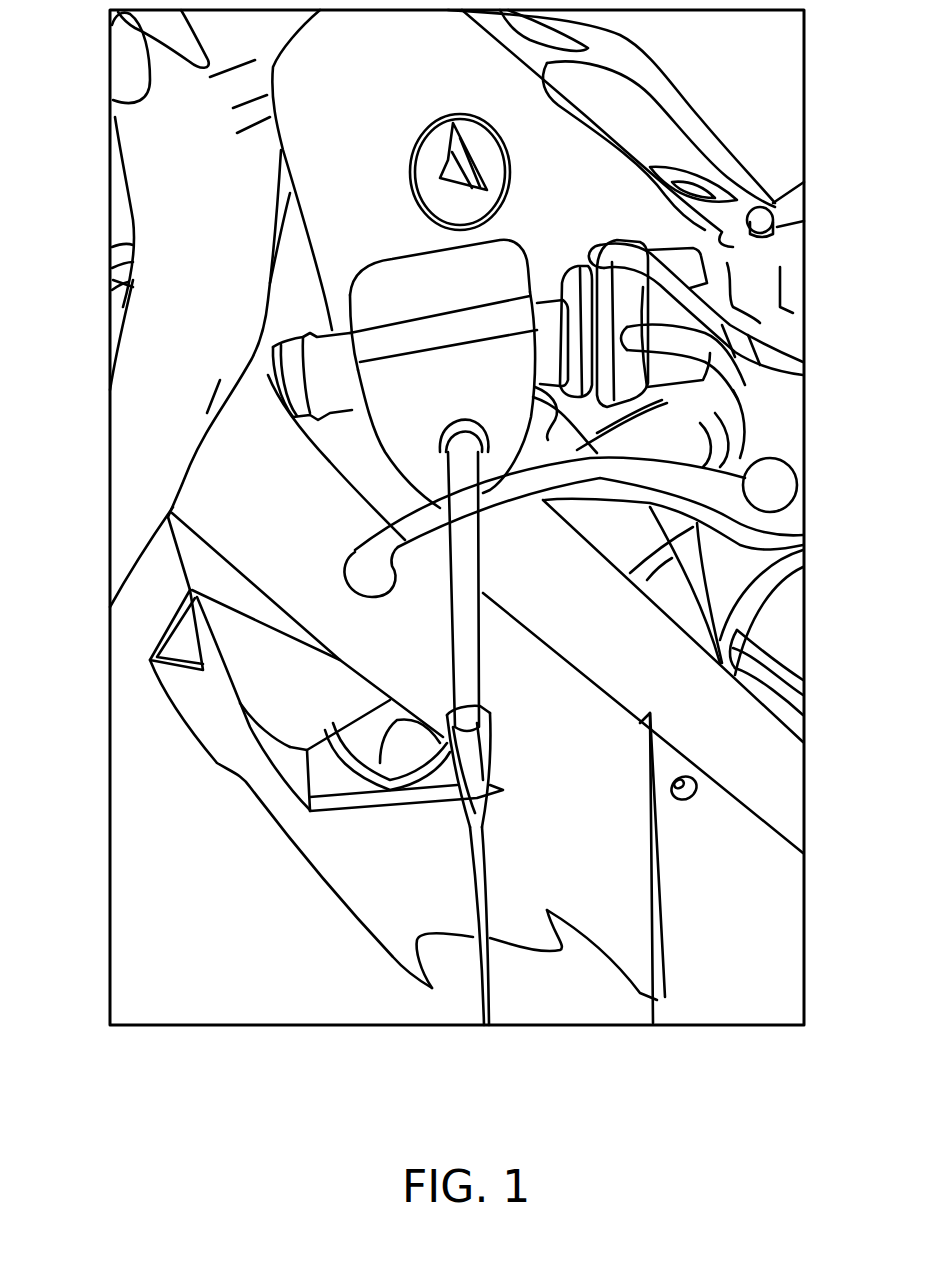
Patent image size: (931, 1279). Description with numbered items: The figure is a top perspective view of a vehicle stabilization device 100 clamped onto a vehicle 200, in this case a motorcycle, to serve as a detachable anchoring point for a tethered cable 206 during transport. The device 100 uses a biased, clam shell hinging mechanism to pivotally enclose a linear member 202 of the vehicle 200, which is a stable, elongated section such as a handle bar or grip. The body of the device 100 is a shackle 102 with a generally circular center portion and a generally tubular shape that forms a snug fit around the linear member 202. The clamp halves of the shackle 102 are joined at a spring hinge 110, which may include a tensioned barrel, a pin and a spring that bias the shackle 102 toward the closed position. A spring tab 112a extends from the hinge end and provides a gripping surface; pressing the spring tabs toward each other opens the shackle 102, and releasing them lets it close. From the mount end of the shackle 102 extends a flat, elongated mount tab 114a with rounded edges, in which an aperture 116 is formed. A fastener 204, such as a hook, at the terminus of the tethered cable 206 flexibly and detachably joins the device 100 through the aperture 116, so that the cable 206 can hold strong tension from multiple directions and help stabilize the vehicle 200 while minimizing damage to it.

The vehicle stabilization device 100 is at (373, 257).
The shackle 102 is at (490, 312).
The spring hinge 110 is at (355, 330).
The spring tab 112a is at (517, 268).
The mount tab 114a is at (385, 416).
The aperture 116 is at (490, 440).
The vehicle 200 is at (170, 743).
The linear member 202 is at (275, 382).
The fastener 204 is at (445, 443).
The tethered cable 206 is at (487, 967).